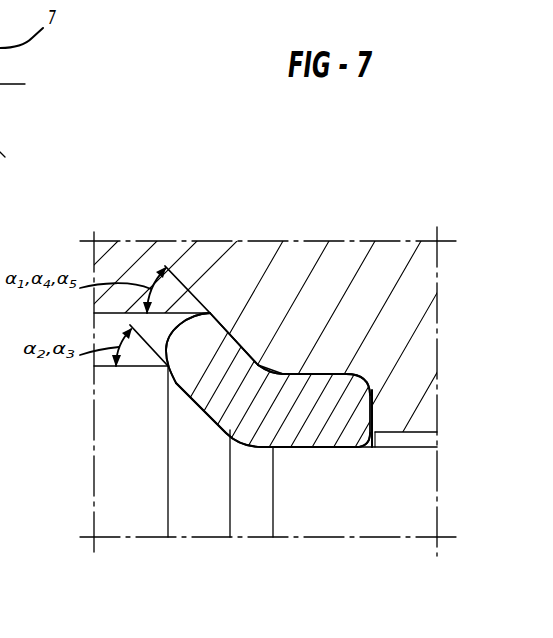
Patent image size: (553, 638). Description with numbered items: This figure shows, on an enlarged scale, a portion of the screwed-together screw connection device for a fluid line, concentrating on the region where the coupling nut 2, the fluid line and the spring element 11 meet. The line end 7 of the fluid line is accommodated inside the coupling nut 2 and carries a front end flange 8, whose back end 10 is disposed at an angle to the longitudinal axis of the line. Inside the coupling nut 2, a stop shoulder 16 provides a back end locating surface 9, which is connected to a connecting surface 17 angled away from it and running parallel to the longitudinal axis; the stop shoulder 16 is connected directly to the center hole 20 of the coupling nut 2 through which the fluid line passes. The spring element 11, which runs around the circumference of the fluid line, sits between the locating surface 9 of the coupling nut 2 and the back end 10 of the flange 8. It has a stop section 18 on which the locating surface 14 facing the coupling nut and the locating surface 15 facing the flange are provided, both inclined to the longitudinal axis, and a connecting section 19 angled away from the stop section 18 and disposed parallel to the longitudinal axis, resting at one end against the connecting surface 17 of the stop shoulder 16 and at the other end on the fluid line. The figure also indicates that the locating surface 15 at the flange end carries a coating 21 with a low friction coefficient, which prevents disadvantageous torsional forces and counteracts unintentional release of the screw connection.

The coupling nut 2 is at (409, 222).
The line end 7 is at (417, 513).
The flange 8 is at (107, 398).
The locating surface 9 is at (243, 341).
The back end 10 is at (216, 420).
The spring element 11 is at (347, 448).
The locating surface 14 is at (267, 309).
The locating surface 15 is at (211, 314).
The stop shoulder 16 is at (258, 366).
The connecting surface 17 is at (372, 393).
The stop section 18 is at (190, 380).
The connecting section 19 is at (307, 448).
The center hole 20 is at (427, 439).
The coating 21 is at (259, 366).